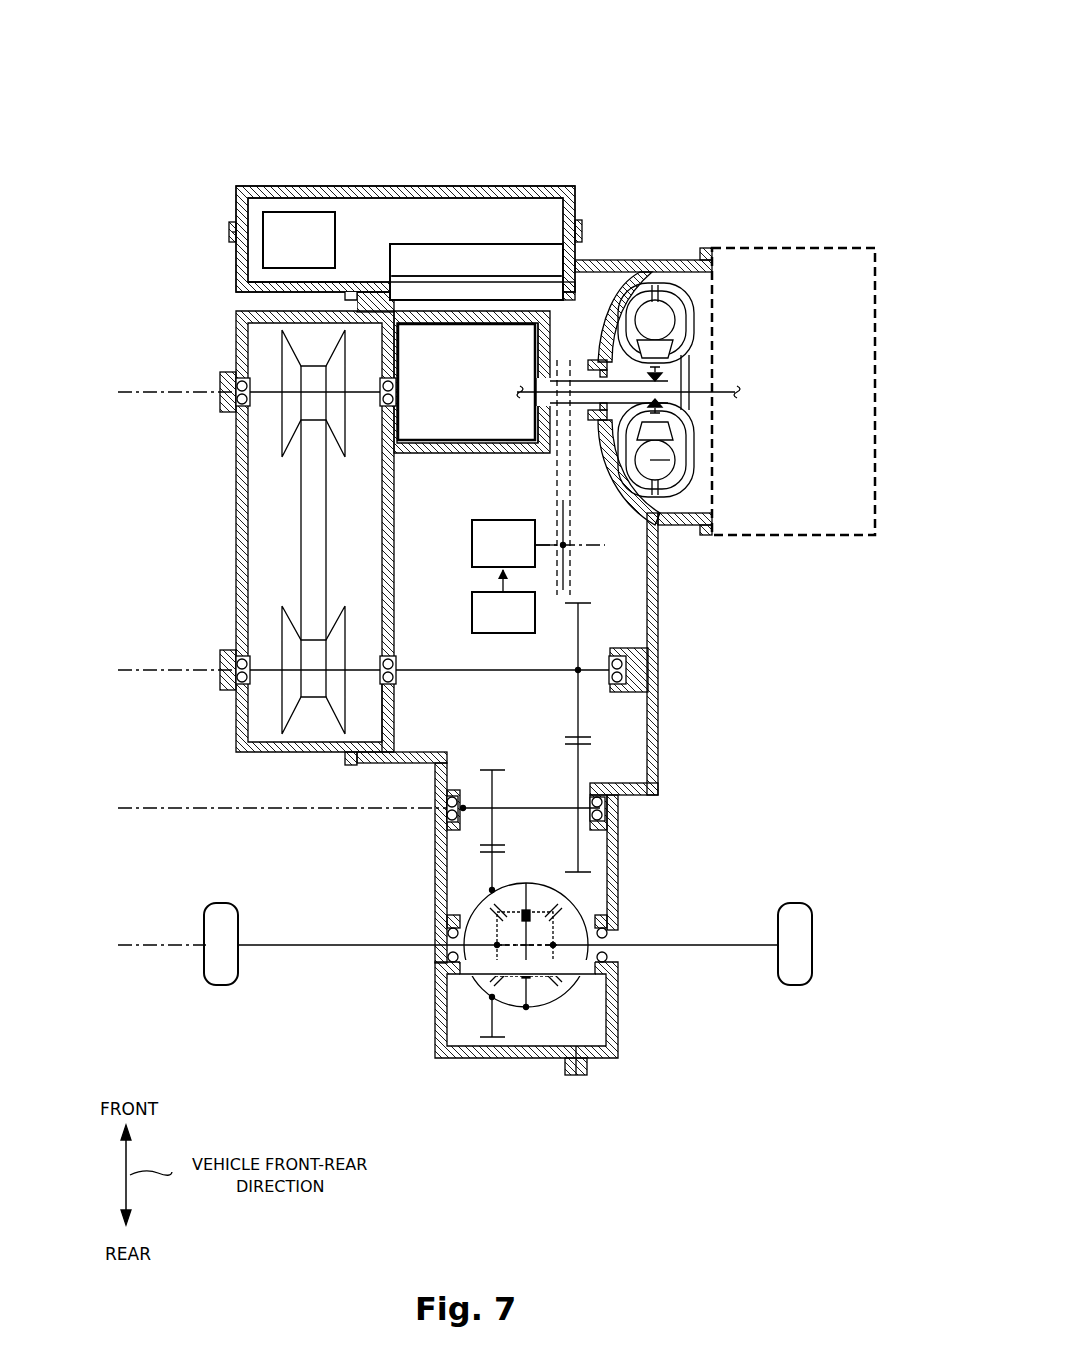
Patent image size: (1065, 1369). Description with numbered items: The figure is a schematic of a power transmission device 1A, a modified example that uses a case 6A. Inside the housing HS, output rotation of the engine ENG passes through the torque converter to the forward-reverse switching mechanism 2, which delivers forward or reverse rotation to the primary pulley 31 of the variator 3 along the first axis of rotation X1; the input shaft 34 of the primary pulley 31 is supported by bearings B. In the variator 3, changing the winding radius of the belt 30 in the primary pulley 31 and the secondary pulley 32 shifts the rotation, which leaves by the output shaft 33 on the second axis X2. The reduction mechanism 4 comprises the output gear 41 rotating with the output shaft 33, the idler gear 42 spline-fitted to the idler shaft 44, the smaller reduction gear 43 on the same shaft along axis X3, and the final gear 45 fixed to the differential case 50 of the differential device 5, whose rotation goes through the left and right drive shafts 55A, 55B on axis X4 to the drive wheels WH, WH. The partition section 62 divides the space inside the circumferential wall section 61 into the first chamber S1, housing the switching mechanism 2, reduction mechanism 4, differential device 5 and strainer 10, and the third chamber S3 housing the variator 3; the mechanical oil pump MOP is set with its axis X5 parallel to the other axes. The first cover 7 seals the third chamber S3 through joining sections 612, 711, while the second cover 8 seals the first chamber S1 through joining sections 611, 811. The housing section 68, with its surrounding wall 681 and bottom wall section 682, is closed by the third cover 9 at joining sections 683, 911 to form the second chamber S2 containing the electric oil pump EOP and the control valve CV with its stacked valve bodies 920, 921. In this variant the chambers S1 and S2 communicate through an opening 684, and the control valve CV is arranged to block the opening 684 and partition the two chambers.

The power transmission device 1A is at (760, 114).
The forward-reverse switching mechanism 2 is at (473, 382).
The variator 3 is at (357, 532).
The reduction mechanism 4 is at (640, 810).
The differential device 5 is at (489, 941).
The case 6A is at (384, 308).
The first cover 7 is at (325, 306).
The second cover 8 is at (612, 258).
The third cover 9 is at (378, 186).
The strainer 10 is at (519, 625).
The belt 30 is at (300, 540).
The primary pulley 31 is at (282, 425).
The secondary pulley 32 is at (282, 630).
The output shaft 33 is at (428, 670).
The input shaft 34 is at (362, 392).
The output gear 41 is at (580, 712).
The idler gear 42 is at (580, 760).
The reduction gear 43 is at (494, 810).
The idler shaft 44 is at (518, 800).
The final gear 45 is at (494, 870).
The differential case 50 is at (572, 983).
The left drive shaft 55A is at (318, 944).
The right drive shaft 55B is at (722, 944).
The circumferential wall section 61 is at (470, 1058).
The partition section 62 is at (392, 710).
The housing section 68 is at (335, 239).
The surrounding wall 681 is at (236, 260).
The bottom wall section 682 is at (240, 292).
The joining section 683 is at (229, 236).
The opening 684 is at (545, 328).
The joining section 611 is at (572, 1076).
The joining section 612 is at (373, 762).
The joining section 711 is at (348, 765).
The joining section 811 is at (588, 1075).
The joining section 911 is at (231, 226).
The control valve plate 920 is at (443, 278).
The valve body 921 is at (503, 288).
The bearing B is at (232, 404).
The housing HS is at (650, 62).
The engine ENG is at (793, 391).
The mechanical oil pump MOP is at (514, 543).
The electric oil pump EOP is at (299, 240).
The control valve CV is at (476, 272).
The drive wheel WH is at (221, 960).
The axis of rotation X1 is at (166, 394).
The axis of rotation X2 is at (166, 672).
The axis of rotation X3 is at (264, 810).
The axis of rotation X4 is at (319, 947).
The axis of rotation X5 is at (587, 477).
The first chamber S1 is at (436, 545).
The second chamber S2 is at (372, 253).
The third chamber S3 is at (366, 545).